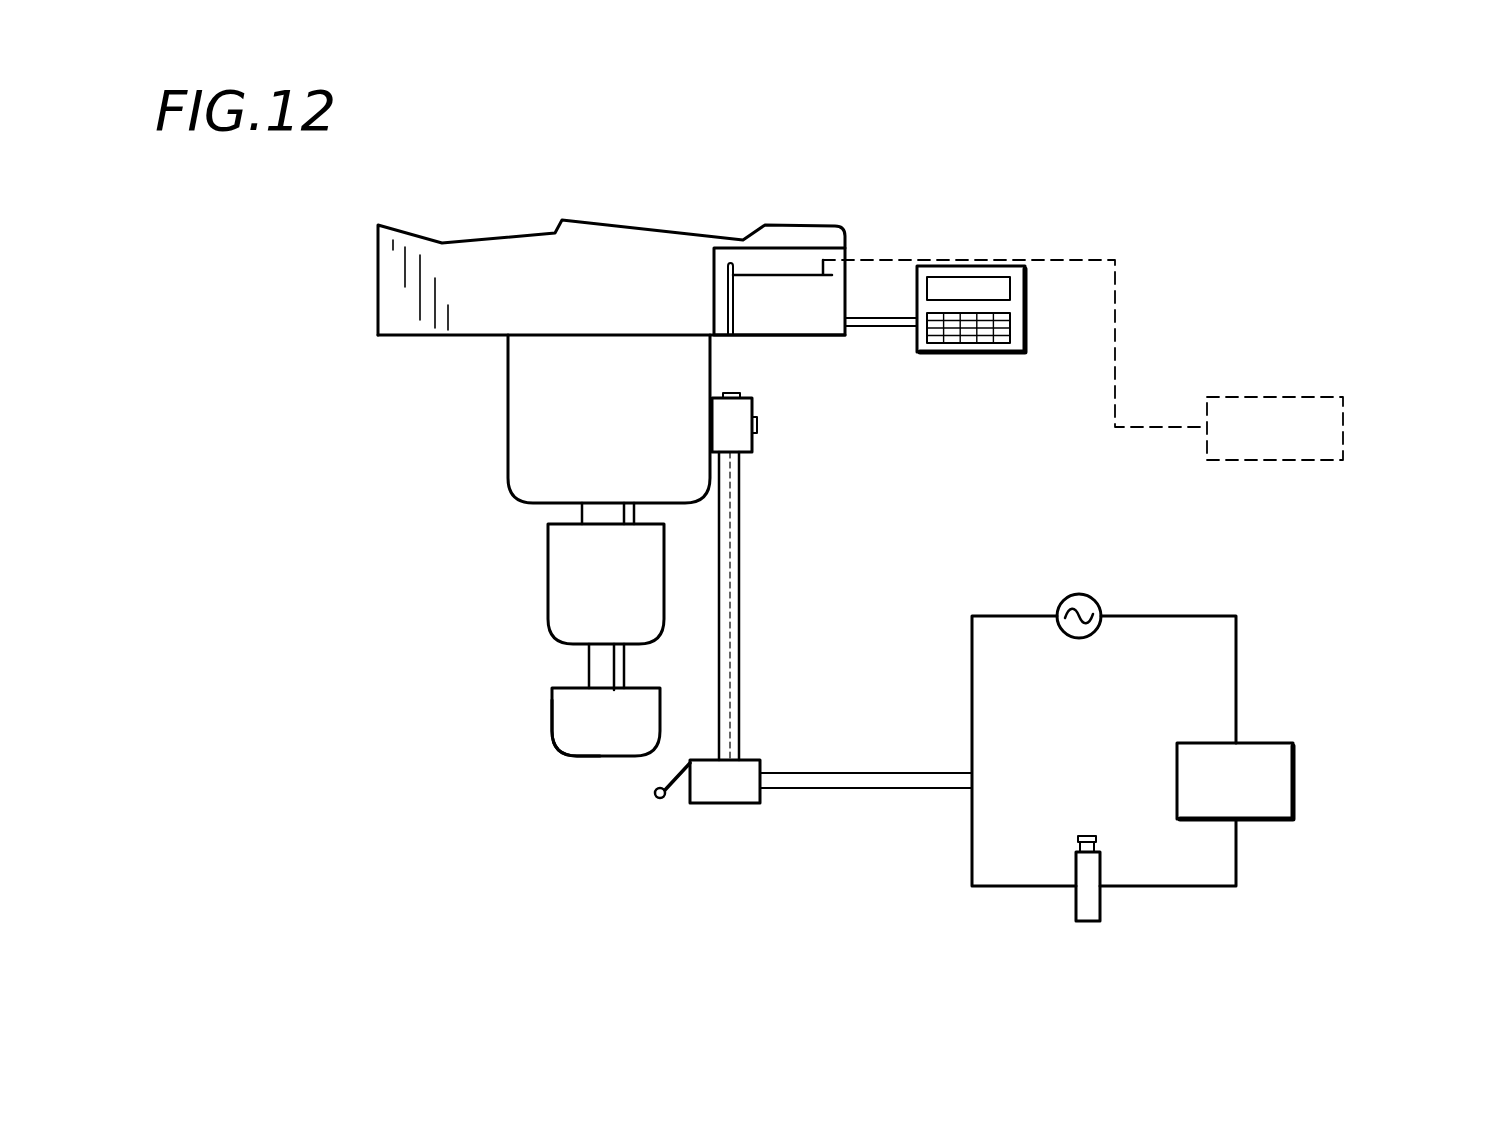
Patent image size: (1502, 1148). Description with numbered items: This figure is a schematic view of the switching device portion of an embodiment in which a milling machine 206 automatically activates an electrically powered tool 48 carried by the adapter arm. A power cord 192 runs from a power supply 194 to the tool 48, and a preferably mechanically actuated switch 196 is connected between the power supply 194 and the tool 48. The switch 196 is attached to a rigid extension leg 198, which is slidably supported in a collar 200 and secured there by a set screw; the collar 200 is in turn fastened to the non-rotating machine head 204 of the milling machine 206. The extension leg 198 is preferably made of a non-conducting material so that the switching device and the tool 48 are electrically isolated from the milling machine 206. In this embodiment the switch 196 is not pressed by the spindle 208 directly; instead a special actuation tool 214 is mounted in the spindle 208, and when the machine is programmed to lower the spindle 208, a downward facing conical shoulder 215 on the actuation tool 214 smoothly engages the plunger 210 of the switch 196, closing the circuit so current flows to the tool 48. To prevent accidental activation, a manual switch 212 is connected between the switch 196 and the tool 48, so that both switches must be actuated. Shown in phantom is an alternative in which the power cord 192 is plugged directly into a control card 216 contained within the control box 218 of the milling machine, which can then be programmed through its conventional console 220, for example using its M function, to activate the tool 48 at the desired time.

The tool 48 is at (1343, 415).
The power cord 192 is at (1117, 295).
The power supply 194 is at (1079, 592).
The switch 196 is at (732, 803).
The extension leg 198 is at (736, 615).
The collar 200 is at (753, 410).
The machine head 204 is at (650, 431).
The milling machine 206 is at (566, 298).
The spindle 208 is at (642, 596).
The plunger 210 is at (662, 800).
The manual switch 212 is at (1070, 912).
The actuation tool 214 is at (611, 760).
The conical shoulder 215 is at (555, 744).
The control card 216 is at (778, 273).
The control box 218 is at (712, 275).
The console 220 is at (985, 353).